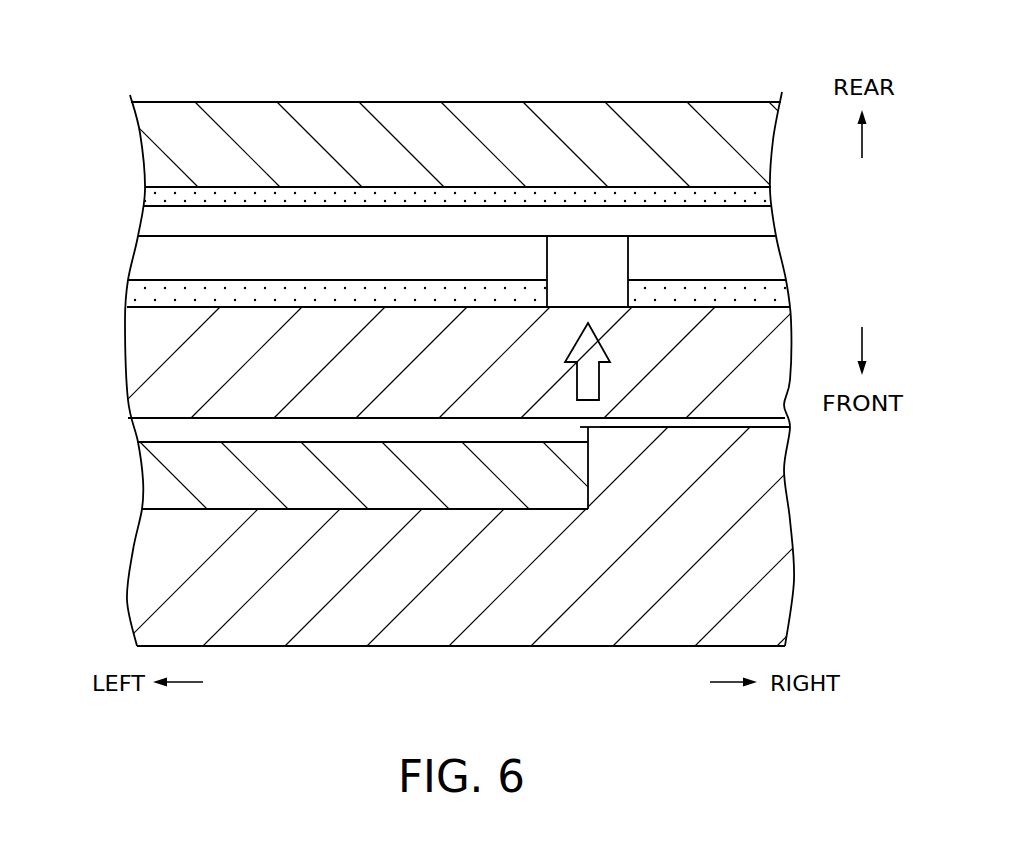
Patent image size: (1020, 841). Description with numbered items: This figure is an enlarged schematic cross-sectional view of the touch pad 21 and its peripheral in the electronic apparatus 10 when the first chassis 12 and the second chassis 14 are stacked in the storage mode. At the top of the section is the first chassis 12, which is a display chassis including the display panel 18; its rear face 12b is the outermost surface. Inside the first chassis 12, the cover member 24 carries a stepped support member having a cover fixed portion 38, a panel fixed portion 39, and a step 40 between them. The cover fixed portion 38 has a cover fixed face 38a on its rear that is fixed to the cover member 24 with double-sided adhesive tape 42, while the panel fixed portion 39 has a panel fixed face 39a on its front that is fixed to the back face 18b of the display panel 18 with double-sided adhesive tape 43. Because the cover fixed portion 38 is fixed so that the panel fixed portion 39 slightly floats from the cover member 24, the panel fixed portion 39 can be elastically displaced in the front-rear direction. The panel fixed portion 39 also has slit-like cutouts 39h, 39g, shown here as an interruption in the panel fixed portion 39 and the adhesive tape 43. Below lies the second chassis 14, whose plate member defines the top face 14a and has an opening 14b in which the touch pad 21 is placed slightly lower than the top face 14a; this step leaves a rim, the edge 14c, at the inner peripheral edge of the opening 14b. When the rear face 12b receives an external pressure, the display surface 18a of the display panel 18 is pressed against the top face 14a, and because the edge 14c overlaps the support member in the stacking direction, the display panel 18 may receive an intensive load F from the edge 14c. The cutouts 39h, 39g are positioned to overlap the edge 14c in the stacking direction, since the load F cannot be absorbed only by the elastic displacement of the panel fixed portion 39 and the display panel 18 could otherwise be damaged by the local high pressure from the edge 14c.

The electronic apparatus 10 is at (424, 330).
The first chassis 12 is at (402, 58).
The rear face 12b is at (333, 102).
The cover member 24 is at (705, 68).
The cover fixed face 38a is at (228, 206).
The double-sided adhesive tape 42 is at (150, 191).
The cover fixed portion 38 is at (150, 221).
The panel fixed portion 39 is at (150, 261).
The panel fixed face 39a is at (207, 282).
The cutout 39h is at (584, 262).
The cutout 39g is at (587, 271).
The step 40 is at (742, 240).
The double-sided adhesive tape 43 is at (779, 296).
The back face 18b is at (143, 307).
The display panel 18 is at (410, 408).
The display surface 18a is at (255, 418).
The load F is at (600, 377).
The touch pad 21 is at (168, 470).
The second chassis 14 is at (354, 675).
The top face 14a is at (733, 405).
The opening 14b is at (592, 432).
The edge 14c is at (580, 425).